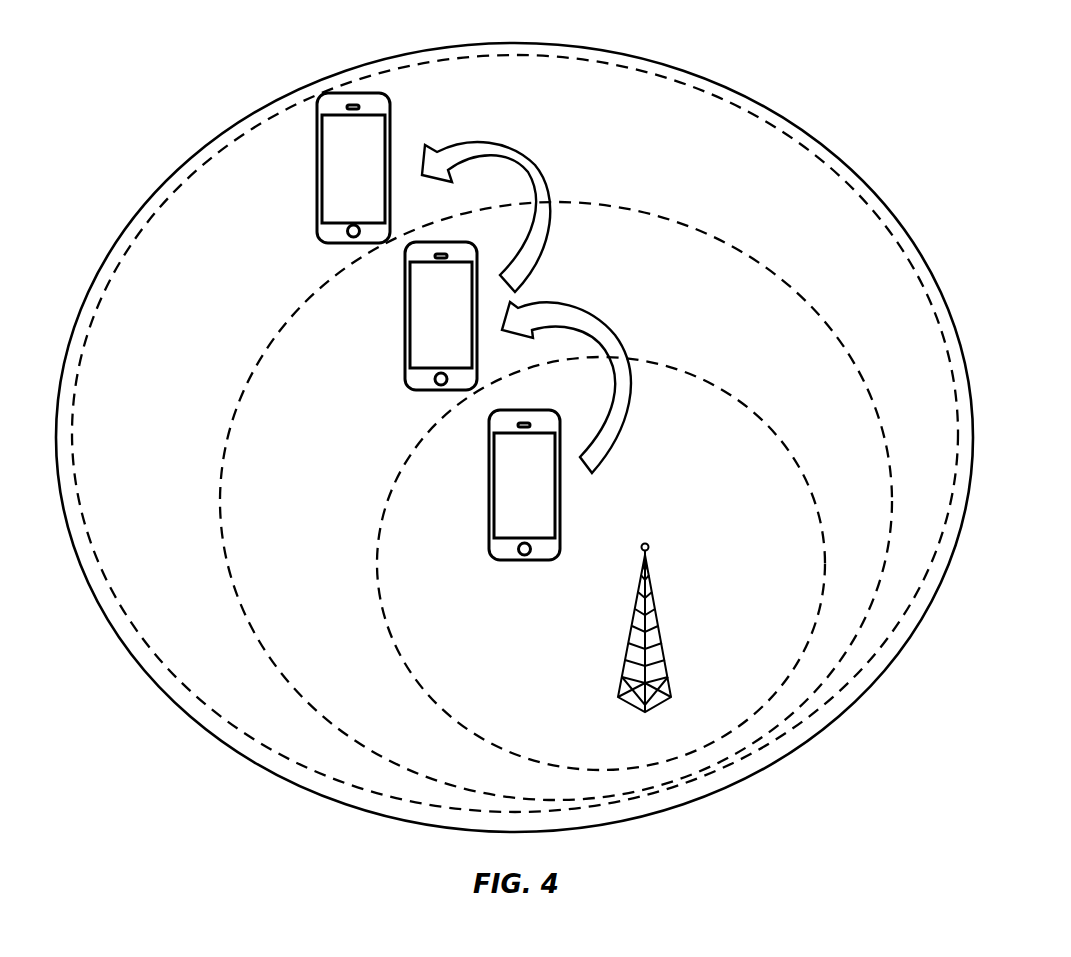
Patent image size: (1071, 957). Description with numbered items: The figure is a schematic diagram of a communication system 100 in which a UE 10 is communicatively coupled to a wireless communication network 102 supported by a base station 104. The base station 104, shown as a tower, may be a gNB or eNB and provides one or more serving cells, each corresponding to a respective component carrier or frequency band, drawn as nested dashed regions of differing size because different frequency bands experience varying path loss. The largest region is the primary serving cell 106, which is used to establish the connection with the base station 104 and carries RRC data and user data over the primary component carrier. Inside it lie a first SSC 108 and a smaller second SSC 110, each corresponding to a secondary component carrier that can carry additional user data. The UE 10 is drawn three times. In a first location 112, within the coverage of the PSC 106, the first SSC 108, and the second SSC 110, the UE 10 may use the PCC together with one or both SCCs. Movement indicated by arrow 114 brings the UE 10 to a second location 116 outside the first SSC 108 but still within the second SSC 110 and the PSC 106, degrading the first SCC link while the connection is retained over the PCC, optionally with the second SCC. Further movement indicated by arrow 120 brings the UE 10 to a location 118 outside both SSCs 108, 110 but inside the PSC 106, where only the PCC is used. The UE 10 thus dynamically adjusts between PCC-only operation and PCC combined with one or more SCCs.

The communication system 100 is at (838, 53).
The wireless communication network 102 is at (893, 213).
The base station 104 is at (660, 632).
The primary serving cell 106 is at (673, 80).
The first secondary serving cell 108 is at (662, 216).
The second secondary serving cell 110 is at (701, 377).
The user equipment 10 is at (317, 162).
The first location 112 is at (489, 518).
The arrow 114 is at (573, 309).
The second location 116 is at (405, 348).
The second location 118 is at (317, 200).
The arrow 120 is at (497, 140).